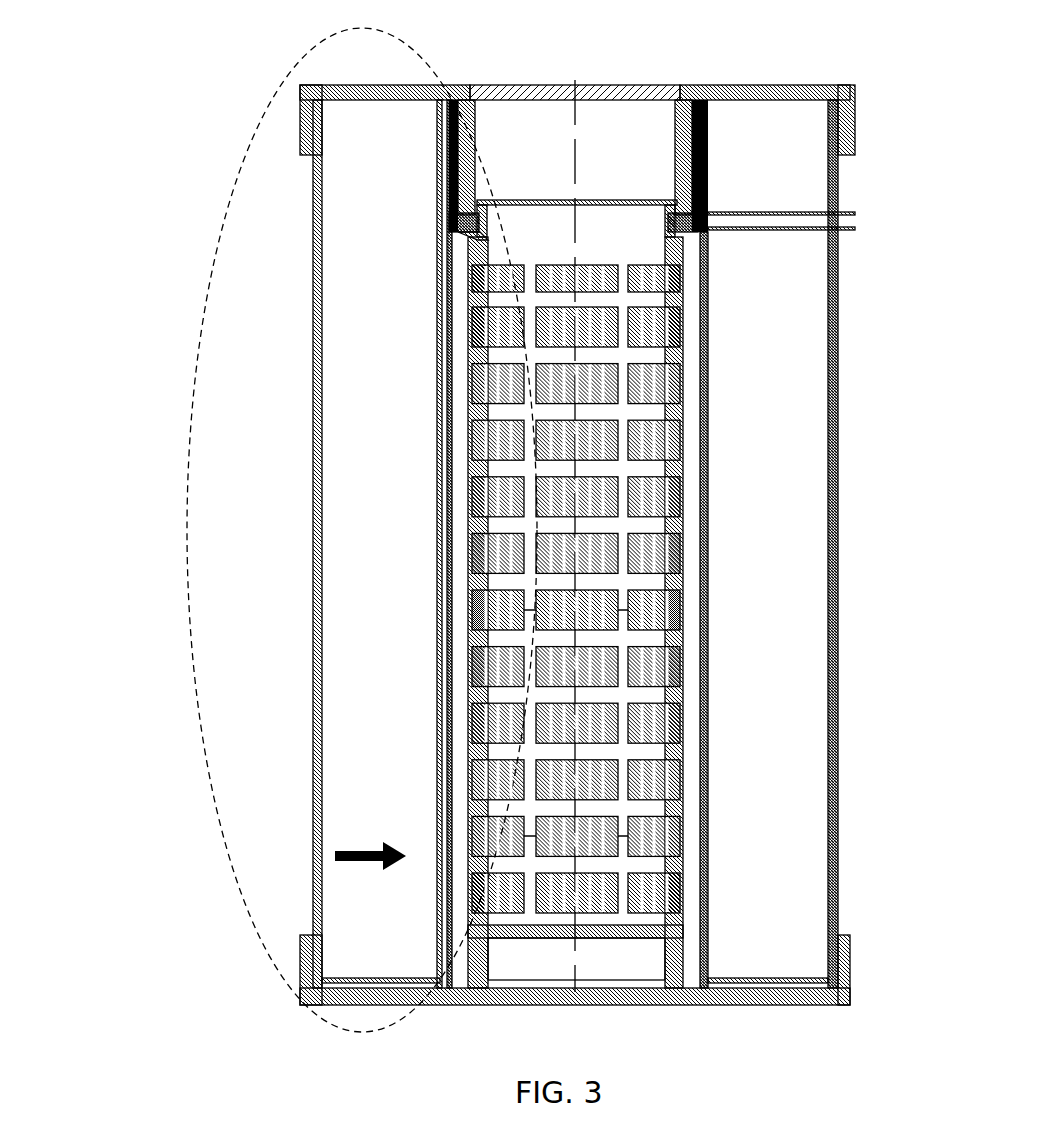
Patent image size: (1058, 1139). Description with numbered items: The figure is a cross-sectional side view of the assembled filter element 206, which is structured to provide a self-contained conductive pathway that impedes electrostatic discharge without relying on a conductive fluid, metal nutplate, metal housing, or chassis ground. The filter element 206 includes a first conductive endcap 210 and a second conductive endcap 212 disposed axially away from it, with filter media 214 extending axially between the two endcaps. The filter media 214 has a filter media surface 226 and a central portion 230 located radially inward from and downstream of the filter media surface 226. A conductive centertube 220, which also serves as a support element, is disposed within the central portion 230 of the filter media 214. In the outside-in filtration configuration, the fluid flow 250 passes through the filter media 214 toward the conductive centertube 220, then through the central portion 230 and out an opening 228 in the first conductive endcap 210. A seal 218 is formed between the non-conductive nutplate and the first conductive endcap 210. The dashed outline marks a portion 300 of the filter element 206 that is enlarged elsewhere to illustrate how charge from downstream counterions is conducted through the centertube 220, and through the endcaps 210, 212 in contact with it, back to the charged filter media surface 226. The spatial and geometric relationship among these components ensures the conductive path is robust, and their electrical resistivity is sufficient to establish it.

The filter element 206 is at (283, 83).
The portion of the filter element 300 is at (443, 58).
The first conductive endcap 210 is at (290, 123).
The second conductive endcap 212 is at (290, 972).
The filter media 214 is at (372, 558).
The seal 218 is at (474, 162).
The conductive centertube 220 is at (450, 358).
The opening 228 is at (545, 212).
The filter media surface 226 is at (838, 705).
The central portion 230 is at (686, 572).
The fluid flow 250 is at (393, 839).